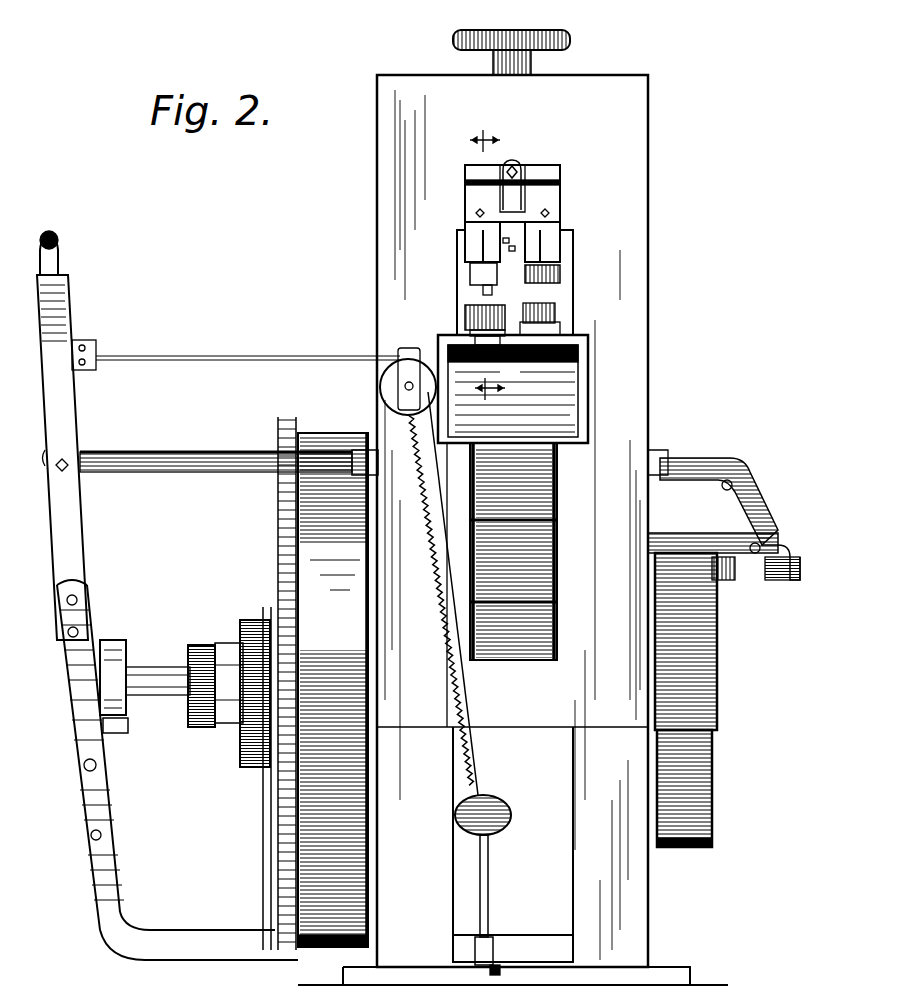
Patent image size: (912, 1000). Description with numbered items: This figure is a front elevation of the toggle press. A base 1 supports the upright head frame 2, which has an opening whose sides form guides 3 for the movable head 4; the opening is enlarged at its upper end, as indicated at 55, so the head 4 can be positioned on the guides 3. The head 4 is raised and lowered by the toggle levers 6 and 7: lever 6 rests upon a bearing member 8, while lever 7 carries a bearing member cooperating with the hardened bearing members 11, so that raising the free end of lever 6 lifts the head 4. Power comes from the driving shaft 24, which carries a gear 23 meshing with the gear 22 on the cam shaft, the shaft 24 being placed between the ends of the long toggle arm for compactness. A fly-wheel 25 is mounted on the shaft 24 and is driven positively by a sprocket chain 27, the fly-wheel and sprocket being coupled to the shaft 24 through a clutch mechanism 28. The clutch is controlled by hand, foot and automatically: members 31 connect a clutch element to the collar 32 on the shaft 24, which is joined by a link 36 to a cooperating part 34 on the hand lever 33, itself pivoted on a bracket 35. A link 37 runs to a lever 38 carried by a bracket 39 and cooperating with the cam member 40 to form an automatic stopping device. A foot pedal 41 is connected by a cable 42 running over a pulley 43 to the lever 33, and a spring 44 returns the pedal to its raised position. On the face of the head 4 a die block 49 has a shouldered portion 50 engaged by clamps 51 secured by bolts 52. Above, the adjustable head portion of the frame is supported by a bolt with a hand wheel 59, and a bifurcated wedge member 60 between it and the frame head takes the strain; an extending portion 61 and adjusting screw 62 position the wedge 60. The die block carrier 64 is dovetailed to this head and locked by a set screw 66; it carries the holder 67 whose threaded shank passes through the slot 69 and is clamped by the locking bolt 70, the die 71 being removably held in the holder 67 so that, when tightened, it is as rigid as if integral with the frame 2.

The base 1 is at (443, 925).
The head frame 2 is at (642, 356).
The guides 3 is at (557, 492).
The movable head 4 is at (565, 410).
The toggle lever 6 is at (548, 572).
The toggle lever 7 is at (540, 500).
The bearing member 8 is at (533, 640).
The bearing members 11 is at (487, 264).
The gear 22 is at (712, 808).
The gear 23 is at (712, 713).
The driving shaft 24 is at (184, 665).
The fly-wheel 25 is at (360, 885).
The sprocket chain 27 is at (277, 868).
The clutch mechanism 28 is at (253, 632).
The members 31 is at (186, 697).
The collar 32 is at (128, 722).
The hand lever 33 is at (74, 556).
The cooperating part 34 is at (80, 707).
The bracket 35 is at (118, 890).
The link 36 is at (110, 640).
The link 37 is at (213, 453).
The lever 38 is at (763, 522).
The bracket 39 is at (712, 533).
The cam member 40 is at (738, 580).
The foot pedal 41 is at (492, 862).
The cable 42 is at (257, 357).
The pulley 43 is at (395, 386).
The spring 44 is at (458, 752).
The die block 49 is at (466, 317).
The shouldered portion 50 is at (513, 346).
The clamps 51 is at (487, 346).
The bolts 52 is at (462, 334).
The enlarged end of opening 55 is at (457, 296).
The hand wheel 59 is at (545, 38).
The wedge member 60 is at (550, 172).
The extending portion 61 is at (525, 170).
The adjusting screw 62 is at (513, 165).
The die block carrier 64 is at (470, 233).
The set screw 66 is at (476, 213).
The die block holder 67 is at (478, 271).
The slot 69 is at (480, 246).
The locking bolt 70 is at (504, 252).
The die 71 is at (492, 288).